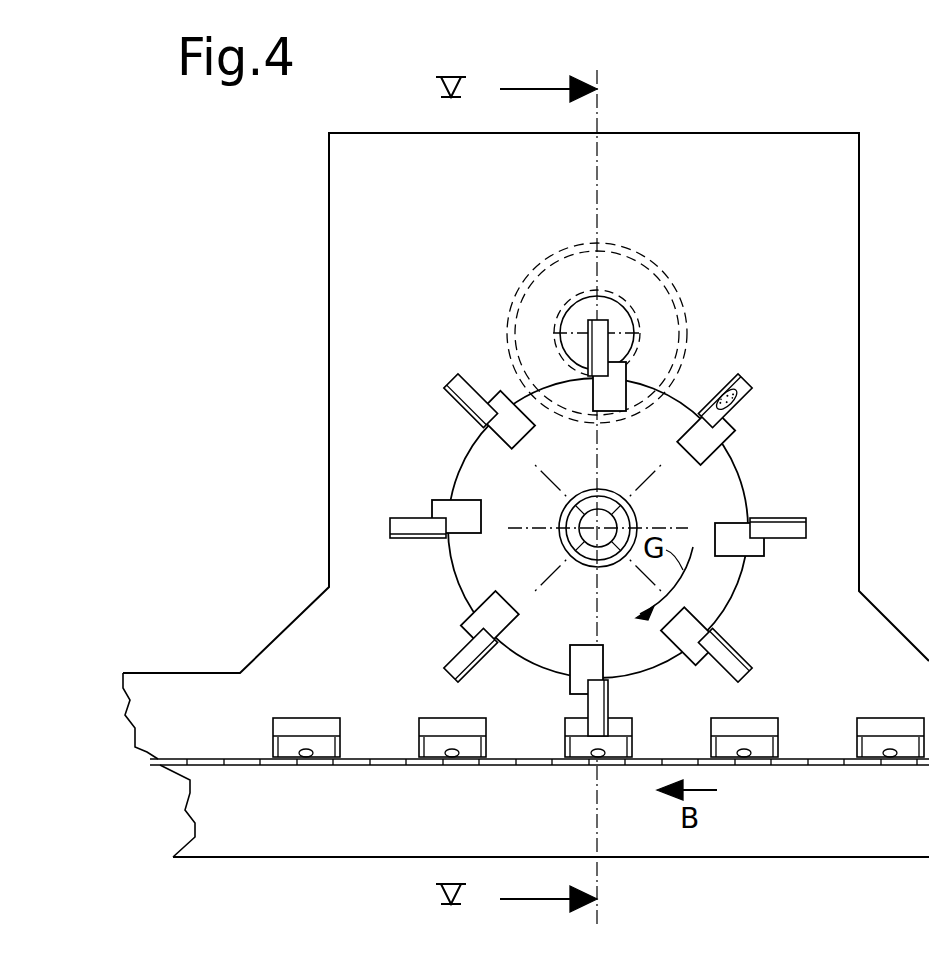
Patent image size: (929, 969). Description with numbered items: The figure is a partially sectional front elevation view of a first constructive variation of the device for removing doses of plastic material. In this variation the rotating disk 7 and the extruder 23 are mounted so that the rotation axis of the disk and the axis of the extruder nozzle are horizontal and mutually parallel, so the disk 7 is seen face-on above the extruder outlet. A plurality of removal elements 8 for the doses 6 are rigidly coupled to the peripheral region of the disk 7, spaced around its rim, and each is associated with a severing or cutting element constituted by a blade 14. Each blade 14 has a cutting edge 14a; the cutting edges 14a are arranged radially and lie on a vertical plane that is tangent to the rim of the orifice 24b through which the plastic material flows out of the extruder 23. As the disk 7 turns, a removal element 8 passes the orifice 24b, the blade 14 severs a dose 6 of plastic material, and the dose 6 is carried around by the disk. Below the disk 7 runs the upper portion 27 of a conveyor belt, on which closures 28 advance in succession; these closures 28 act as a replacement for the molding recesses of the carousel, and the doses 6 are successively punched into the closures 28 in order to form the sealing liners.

The doses of plastic material 6 is at (593, 756).
The rotating disk 7 is at (711, 507).
The removal elements 8 is at (761, 566).
The severing or cutting element (blade) 14 is at (736, 378).
The cutting edge 14a is at (748, 398).
The extruder 23 is at (608, 303).
The orifice 24b is at (573, 327).
The upper portion of conveyor belt 27 is at (814, 763).
The closures 28 is at (928, 698).